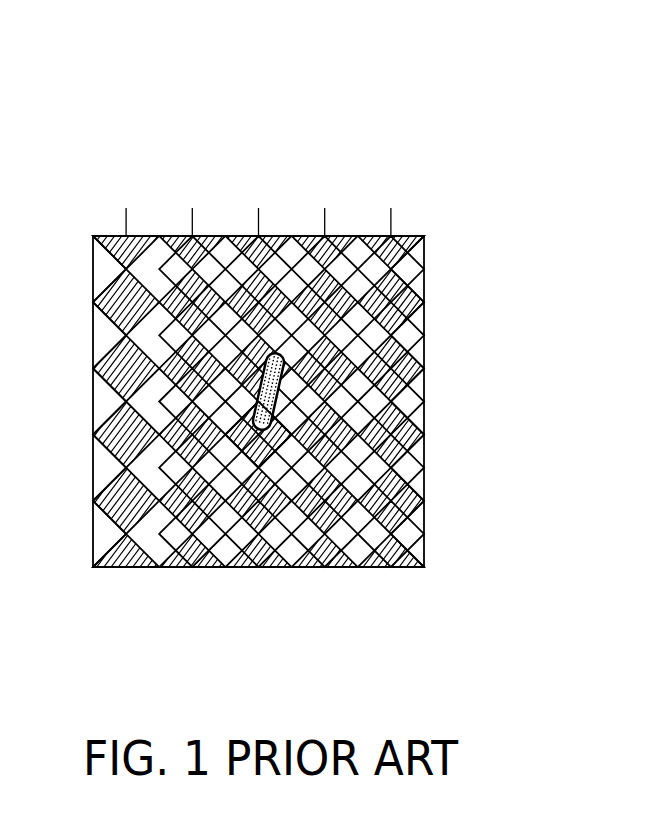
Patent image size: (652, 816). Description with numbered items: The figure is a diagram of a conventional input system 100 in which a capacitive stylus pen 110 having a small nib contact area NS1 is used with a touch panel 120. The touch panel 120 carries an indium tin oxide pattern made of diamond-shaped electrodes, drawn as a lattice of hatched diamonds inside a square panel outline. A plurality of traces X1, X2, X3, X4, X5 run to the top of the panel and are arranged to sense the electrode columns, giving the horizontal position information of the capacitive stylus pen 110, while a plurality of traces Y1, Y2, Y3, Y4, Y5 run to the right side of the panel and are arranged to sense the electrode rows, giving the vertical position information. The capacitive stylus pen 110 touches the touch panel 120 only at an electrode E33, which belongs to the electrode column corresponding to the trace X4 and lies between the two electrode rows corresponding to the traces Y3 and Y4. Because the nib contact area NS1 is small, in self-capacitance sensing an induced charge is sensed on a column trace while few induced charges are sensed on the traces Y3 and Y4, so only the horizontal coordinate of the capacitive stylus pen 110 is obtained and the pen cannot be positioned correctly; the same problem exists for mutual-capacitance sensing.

The input system 100 is at (331, 335).
The touch panel 120 is at (92, 272).
The capacitive stylus pen 110 is at (271, 370).
The nib contact area NS1 is at (256, 415).
The electrode E33 is at (264, 432).
The trace X1 is at (258, 373).
The trace X2 is at (258, 373).
The trace X3 is at (258, 373).
The trace X4 is at (258, 373).
The trace X5 is at (258, 373).
The trace Y1 is at (424, 269).
The trace Y2 is at (424, 335).
The trace Y3 is at (424, 402).
The trace Y4 is at (424, 468).
The trace Y5 is at (424, 534).